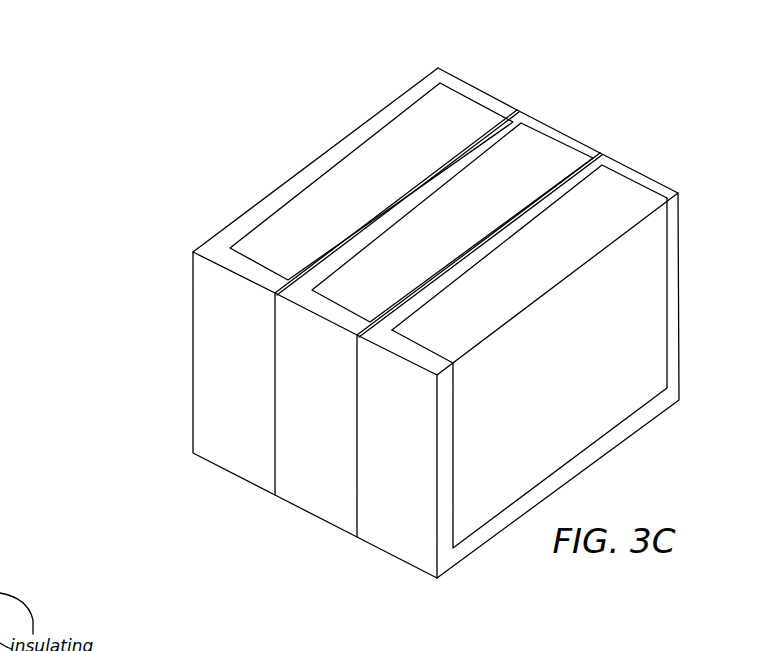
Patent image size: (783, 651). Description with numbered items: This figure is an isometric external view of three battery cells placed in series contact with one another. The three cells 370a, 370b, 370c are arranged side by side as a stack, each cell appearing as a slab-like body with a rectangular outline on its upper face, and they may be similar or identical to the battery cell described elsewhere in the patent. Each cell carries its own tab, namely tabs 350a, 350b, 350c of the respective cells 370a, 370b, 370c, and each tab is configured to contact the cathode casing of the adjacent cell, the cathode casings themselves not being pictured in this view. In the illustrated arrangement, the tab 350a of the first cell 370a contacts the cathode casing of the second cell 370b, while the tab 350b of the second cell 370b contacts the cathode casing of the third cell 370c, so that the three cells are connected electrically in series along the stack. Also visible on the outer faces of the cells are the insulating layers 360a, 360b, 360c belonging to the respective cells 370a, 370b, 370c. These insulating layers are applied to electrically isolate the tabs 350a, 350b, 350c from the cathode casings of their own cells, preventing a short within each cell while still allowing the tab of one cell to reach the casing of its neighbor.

The tab 350a is at (450, 109).
The tab 350b is at (533, 150).
The tab 350c is at (613, 202).
The cell 370a is at (341, 202).
The cell 370b is at (414, 251).
The cell 370c is at (493, 295).
The insulating layer 360a is at (217, 382).
The insulating layer 360b is at (318, 508).
The insulating layer 360c is at (418, 550).